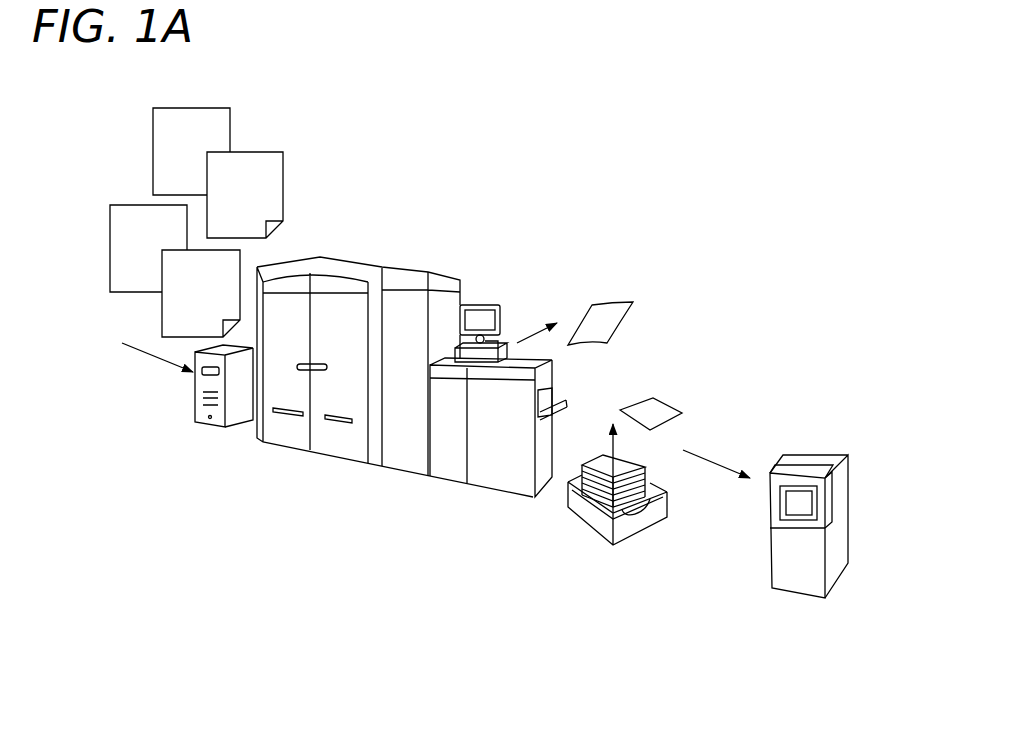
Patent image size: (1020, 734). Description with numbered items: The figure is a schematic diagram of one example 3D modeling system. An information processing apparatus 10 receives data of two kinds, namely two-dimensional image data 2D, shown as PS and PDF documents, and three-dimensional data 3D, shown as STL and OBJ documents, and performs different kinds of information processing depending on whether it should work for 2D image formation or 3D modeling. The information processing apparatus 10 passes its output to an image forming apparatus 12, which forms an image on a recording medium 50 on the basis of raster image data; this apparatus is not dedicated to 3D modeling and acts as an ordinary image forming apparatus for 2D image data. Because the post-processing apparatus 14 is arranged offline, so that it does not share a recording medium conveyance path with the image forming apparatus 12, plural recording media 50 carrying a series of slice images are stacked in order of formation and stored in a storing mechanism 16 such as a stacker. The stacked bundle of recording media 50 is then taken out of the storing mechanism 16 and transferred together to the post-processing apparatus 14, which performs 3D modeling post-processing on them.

The two-dimensional image data 2D is at (264, 133).
The three-dimensional data 3D is at (137, 306).
The information processing apparatus 10 is at (226, 428).
The image forming apparatus 12 is at (513, 243).
The 3D modeling post-processing apparatus 14 is at (837, 455).
The storing mechanism 16 is at (613, 540).
The recording medium 50 is at (615, 298).